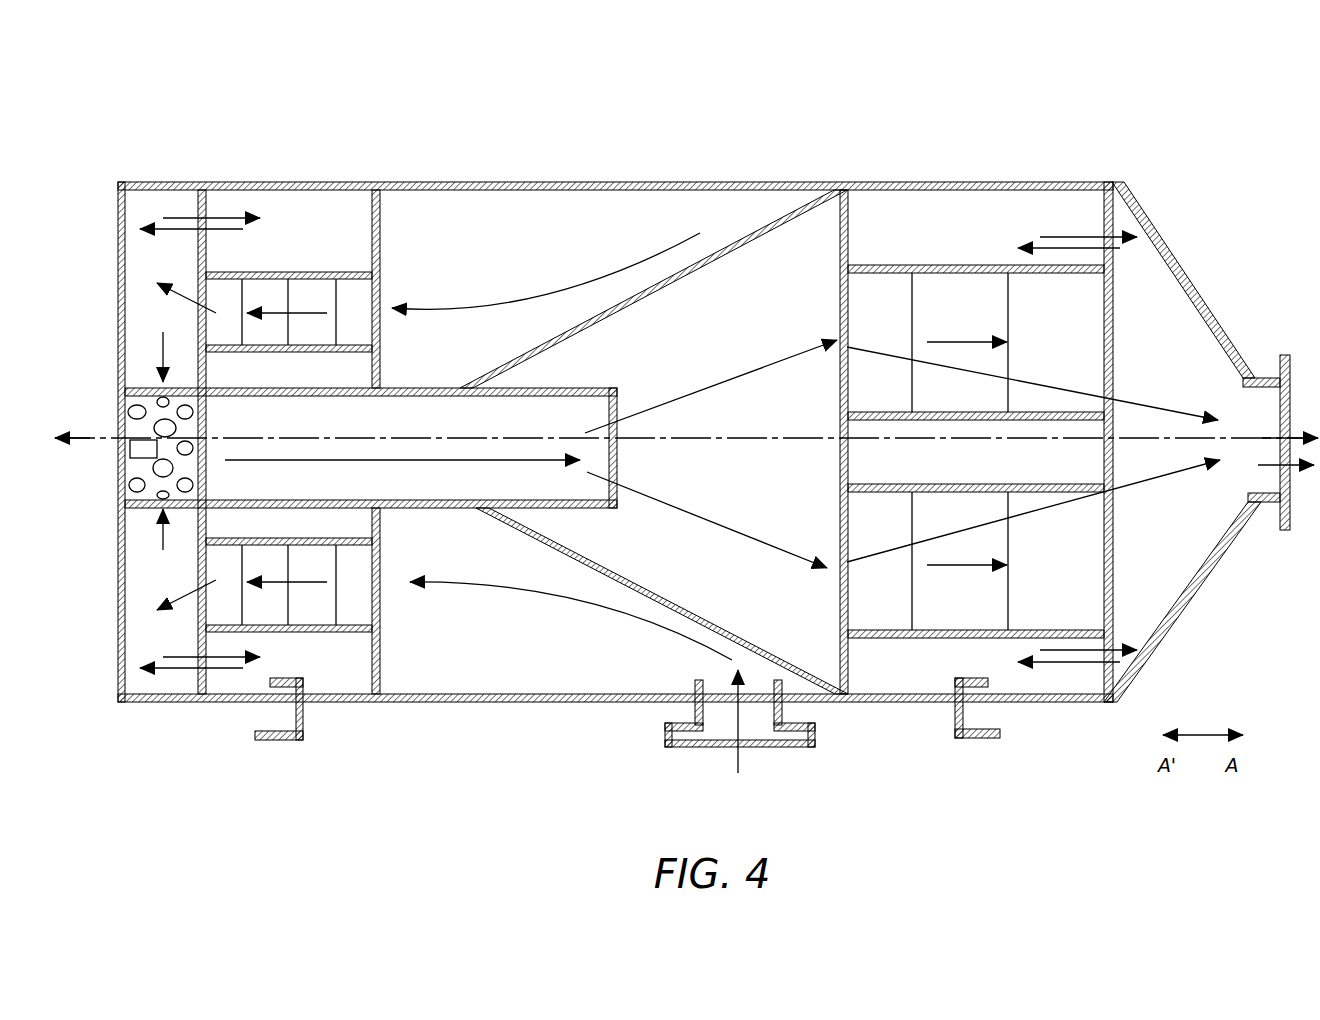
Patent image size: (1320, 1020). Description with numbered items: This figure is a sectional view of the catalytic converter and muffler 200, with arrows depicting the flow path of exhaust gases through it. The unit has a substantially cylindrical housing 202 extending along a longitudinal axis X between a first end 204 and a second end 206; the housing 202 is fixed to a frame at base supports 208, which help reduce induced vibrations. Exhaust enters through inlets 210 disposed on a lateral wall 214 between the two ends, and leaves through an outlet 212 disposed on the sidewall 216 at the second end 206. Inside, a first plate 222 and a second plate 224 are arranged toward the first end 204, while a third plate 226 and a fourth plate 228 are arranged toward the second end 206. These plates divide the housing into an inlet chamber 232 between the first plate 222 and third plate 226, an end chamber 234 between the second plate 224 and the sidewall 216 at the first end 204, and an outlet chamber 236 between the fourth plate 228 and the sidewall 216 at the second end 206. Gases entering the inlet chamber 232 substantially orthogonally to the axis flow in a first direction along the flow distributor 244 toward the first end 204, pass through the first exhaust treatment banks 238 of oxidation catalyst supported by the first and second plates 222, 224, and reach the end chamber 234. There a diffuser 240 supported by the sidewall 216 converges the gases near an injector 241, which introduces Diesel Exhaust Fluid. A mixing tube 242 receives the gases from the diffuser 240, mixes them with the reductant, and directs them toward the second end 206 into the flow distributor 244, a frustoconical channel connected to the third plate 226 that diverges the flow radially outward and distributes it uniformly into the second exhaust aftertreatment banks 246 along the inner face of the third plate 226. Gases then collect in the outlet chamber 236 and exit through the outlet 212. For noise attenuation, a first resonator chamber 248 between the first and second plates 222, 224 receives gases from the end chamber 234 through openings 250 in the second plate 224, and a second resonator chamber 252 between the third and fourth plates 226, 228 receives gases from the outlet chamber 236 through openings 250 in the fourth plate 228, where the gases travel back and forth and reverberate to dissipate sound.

The catalytic converter and muffler 200 is at (150, 112).
The housing 202 is at (1092, 703).
The first end 204 is at (120, 372).
The second end 206 is at (1243, 378).
The base supports 208 is at (268, 742).
The inlet 210 is at (677, 750).
The outlet 212 is at (1290, 532).
The lateral wall 214 is at (582, 703).
The sidewall 216 is at (120, 250).
The first plate 222 is at (374, 190).
The second plate 224 is at (200, 190).
The third plate 226 is at (842, 200).
The fourth plate 228 is at (1103, 190).
The inlet chamber 232 is at (567, 668).
The end chamber 234 is at (143, 579).
The outlet chamber 236 is at (1142, 491).
The first exhaust treatment banks 238 is at (309, 272).
The diffuser 240 is at (125, 393).
The injector 241 is at (130, 460).
The mixing tube 242 is at (440, 410).
The flow distributor 244 is at (765, 230).
The second exhaust aftertreatment banks 246 is at (918, 265).
The first resonator chamber 248 is at (268, 531).
The openings 250 is at (214, 205).
The second resonator chamber 252 is at (947, 468).